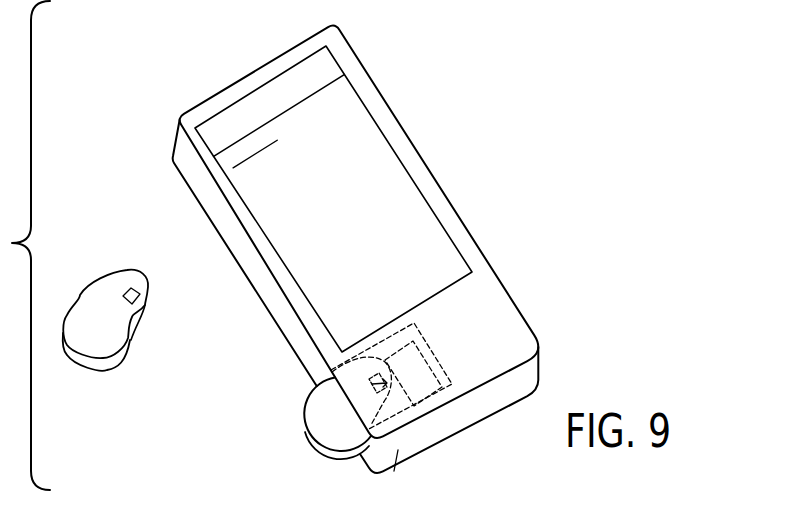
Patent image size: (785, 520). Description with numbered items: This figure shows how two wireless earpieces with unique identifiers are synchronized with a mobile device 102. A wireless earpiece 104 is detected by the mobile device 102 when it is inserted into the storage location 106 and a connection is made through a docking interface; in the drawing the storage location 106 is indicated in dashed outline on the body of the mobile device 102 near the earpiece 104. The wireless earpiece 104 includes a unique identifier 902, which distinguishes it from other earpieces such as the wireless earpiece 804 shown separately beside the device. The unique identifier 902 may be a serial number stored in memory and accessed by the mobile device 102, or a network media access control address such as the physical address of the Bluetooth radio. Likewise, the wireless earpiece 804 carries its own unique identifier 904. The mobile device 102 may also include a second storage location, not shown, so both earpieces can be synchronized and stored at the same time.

The mobile device 102 is at (250, 74).
The wireless earpiece 104 is at (304, 418).
The storage location 106 is at (416, 323).
The unique identifier 902 is at (428, 354).
The wireless earpiece 804 is at (93, 288).
The unique identifier 904 is at (139, 294).